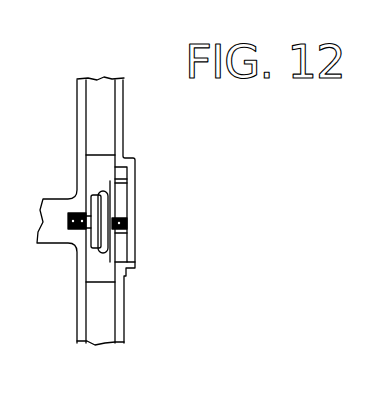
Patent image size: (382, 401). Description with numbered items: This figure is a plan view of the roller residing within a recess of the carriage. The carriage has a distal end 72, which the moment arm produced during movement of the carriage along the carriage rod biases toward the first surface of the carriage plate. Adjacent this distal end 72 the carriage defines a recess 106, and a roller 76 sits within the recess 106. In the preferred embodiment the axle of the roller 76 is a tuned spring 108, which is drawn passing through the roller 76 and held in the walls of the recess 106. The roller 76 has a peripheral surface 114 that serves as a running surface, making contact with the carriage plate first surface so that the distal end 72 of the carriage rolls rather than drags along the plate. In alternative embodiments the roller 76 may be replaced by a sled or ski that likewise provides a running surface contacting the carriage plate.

The recess 106 is at (98, 167).
The distal end 72 is at (136, 197).
The roller 76 is at (103, 195).
The tuned spring 108 is at (124, 230).
The peripheral surface 114 is at (98, 256).